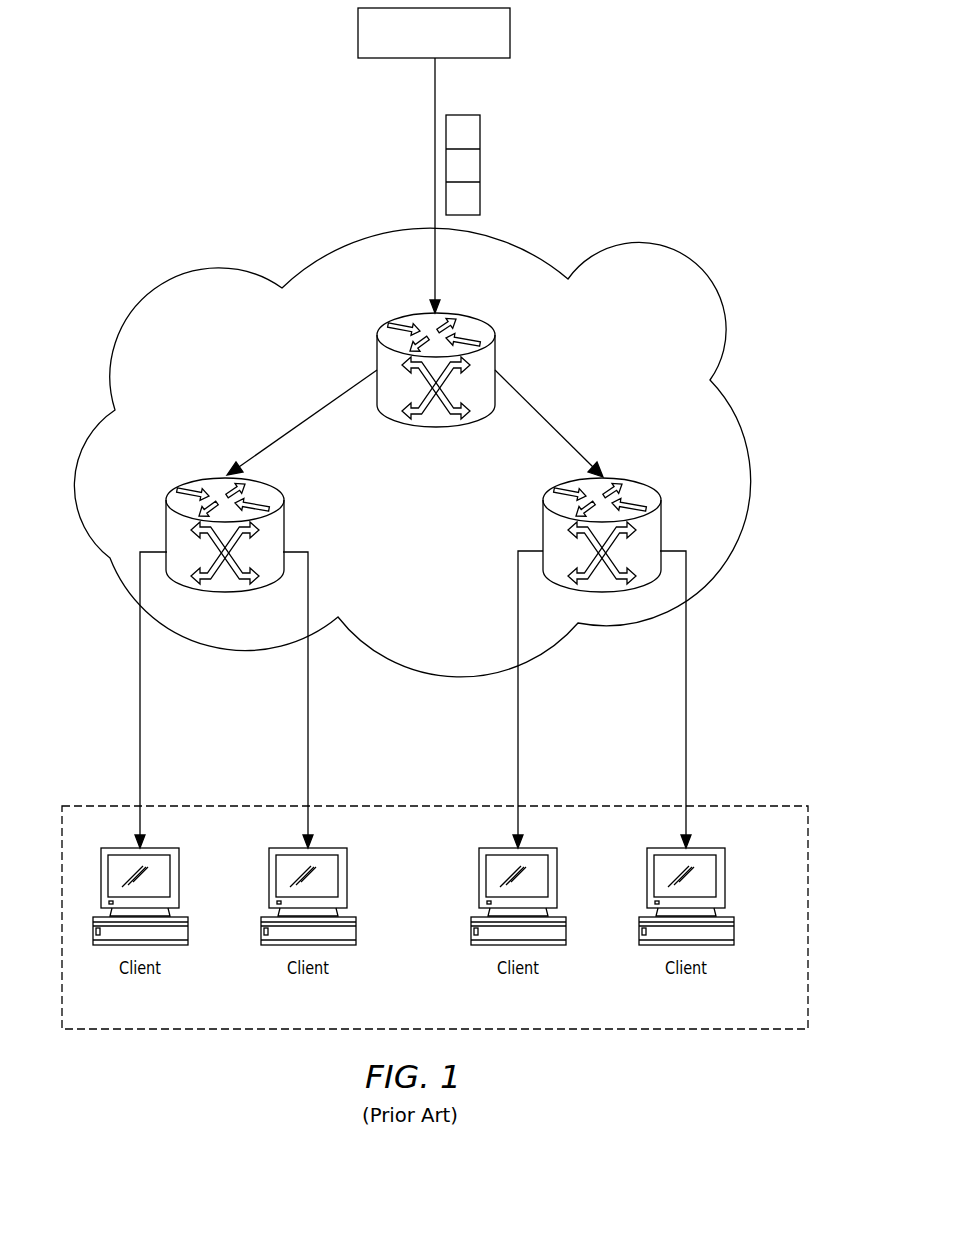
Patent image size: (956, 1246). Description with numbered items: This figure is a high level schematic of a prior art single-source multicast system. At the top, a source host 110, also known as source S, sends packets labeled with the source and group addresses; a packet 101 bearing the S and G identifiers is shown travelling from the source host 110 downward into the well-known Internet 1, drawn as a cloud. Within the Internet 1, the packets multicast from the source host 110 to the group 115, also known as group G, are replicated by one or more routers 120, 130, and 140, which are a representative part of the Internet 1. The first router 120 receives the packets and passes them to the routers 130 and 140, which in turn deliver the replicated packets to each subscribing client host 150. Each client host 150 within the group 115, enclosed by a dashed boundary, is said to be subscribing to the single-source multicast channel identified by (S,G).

The Internet 1 is at (660, 267).
The source host 110 is at (512, 38).
The packet 101 is at (482, 190).
The router 120 is at (436, 428).
The router 130 is at (283, 522).
The router 140 is at (543, 522).
The client host 150 is at (180, 880).
The group 115 is at (742, 1031).